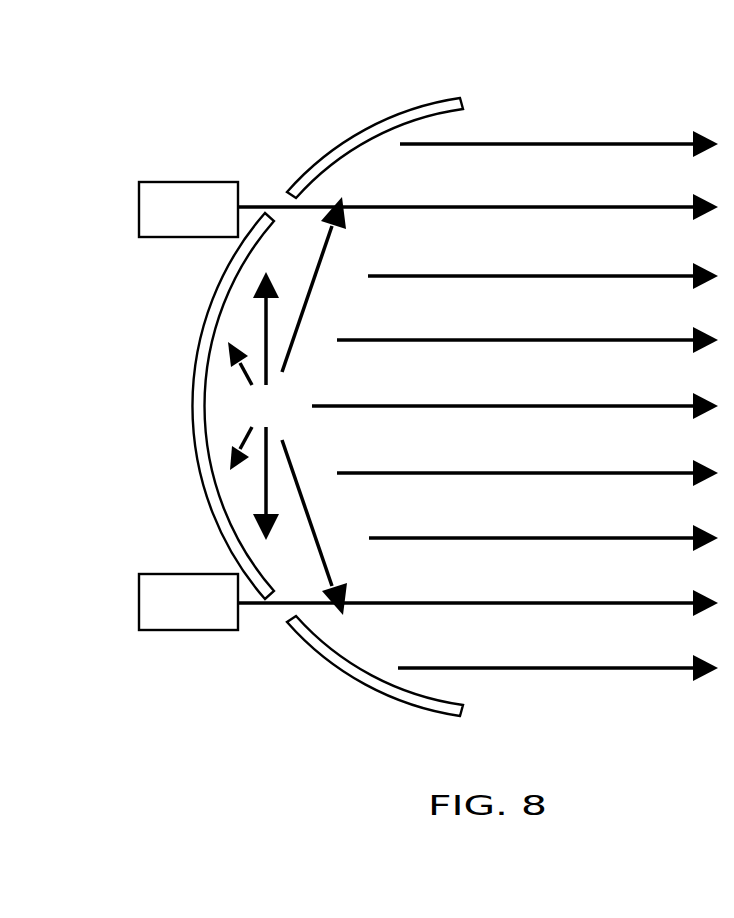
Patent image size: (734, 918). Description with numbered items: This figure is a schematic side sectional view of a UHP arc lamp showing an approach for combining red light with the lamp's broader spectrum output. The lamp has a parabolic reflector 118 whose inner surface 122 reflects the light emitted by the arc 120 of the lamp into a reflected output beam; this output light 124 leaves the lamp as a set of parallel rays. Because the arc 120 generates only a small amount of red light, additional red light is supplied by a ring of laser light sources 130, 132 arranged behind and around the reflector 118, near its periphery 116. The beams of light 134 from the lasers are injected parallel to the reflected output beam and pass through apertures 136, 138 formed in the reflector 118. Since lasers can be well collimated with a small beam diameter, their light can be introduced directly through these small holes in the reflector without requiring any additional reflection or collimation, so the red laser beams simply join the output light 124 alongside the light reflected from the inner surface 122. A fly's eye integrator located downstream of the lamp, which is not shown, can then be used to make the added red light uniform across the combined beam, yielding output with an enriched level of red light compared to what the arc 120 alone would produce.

The periphery 116 is at (465, 103).
The parabolic reflector 118 is at (378, 122).
The inner surface 122 is at (375, 142).
The output light 124 is at (478, 406).
The beams of light 134 is at (632, 207).
The arc 120 is at (273, 410).
The laser light source 130 is at (183, 631).
The laser light source 132 is at (188, 182).
The aperture 136 is at (272, 613).
The aperture 138 is at (277, 206).